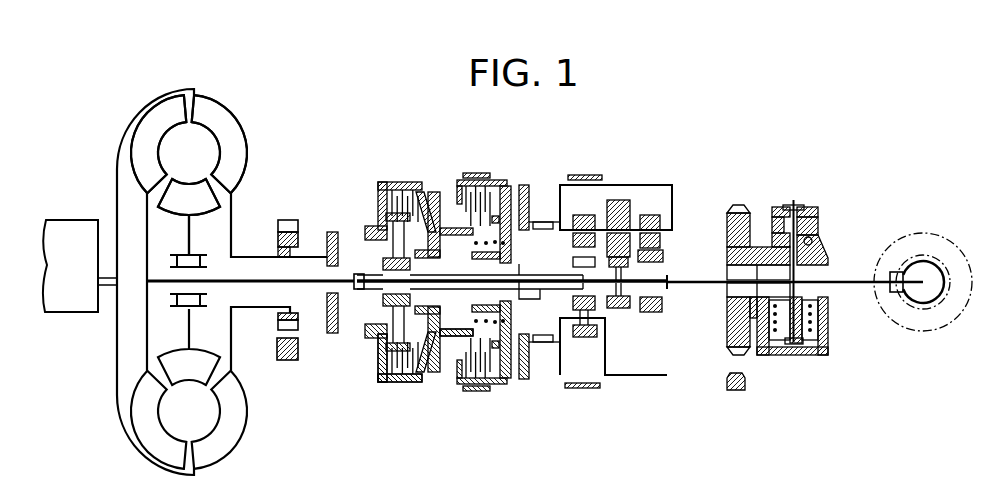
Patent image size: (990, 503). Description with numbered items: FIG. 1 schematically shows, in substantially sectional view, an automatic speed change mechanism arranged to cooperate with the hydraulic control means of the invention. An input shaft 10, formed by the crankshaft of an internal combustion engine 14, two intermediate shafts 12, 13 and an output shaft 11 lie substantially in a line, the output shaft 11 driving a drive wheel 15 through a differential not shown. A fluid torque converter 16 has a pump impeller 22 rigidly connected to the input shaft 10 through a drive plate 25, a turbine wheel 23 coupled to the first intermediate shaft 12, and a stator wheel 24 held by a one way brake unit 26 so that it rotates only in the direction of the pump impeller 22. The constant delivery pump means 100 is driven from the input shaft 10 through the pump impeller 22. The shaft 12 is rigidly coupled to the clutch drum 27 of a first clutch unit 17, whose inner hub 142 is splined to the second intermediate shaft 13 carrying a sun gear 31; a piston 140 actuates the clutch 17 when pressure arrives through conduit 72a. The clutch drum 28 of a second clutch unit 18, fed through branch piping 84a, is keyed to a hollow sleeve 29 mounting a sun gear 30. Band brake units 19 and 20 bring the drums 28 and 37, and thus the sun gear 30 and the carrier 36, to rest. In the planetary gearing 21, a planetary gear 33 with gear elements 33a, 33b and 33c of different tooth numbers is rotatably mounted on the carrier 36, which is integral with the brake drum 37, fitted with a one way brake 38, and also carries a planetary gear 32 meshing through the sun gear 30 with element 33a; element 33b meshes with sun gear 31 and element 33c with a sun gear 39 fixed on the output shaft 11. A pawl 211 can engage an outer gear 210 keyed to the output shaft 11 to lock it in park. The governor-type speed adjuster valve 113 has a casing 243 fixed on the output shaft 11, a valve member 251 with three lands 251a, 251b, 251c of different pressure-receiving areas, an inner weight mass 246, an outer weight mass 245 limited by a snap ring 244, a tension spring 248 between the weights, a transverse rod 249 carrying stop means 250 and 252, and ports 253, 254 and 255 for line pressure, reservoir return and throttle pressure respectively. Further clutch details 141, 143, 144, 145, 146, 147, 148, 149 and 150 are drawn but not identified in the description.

The input shaft 10 is at (107, 313).
The output shaft 11 is at (695, 284).
The first intermediate shaft 12 is at (253, 284).
The second intermediate shaft 13 is at (438, 282).
The internal combustion engine 14 is at (79, 273).
The drive wheel 15 is at (905, 332).
The fluid torque converter 16 is at (172, 86).
The first clutch unit 17 is at (400, 178).
The second clutch unit 18 is at (503, 184).
The first brake unit 19 is at (477, 172).
The second brake unit 20 is at (583, 173).
The planetary gearing 21 is at (618, 346).
The pump impeller 22 is at (208, 114).
The turbine wheel 23 is at (148, 130).
The stator wheel 24 is at (200, 200).
The drive plate 25 is at (118, 178).
The one way brake unit 26 is at (190, 256).
The clutch drum 27 is at (393, 182).
The clutch drum 28 is at (460, 180).
The hollow sleeve 29 is at (540, 290).
The sun gear 30 is at (597, 300).
The sun gear 31 is at (620, 303).
The planetary gear 32 is at (585, 338).
The planetary gear 33 is at (645, 217).
The gear element 33a is at (585, 216).
The gear element 33b is at (622, 200).
The gear element 33c is at (661, 222).
The carrier 36 is at (562, 184).
The brake drum 37 is at (604, 185).
The one way brake 38 is at (543, 222).
The sun gear 39 is at (662, 311).
The conduit 72a is at (442, 362).
The branch piping 84a is at (524, 380).
The pump means 100 is at (318, 206).
The speed adjuster valve 113 is at (784, 279).
The piston 140 is at (433, 368).
The lever 141 is at (410, 383).
The inner hub 142 is at (385, 300).
The clutch wall 143 is at (378, 357).
The clutch flange 144 is at (380, 378).
The lever 145 is at (422, 191).
The housing wall 146 is at (518, 220).
The spring seat 147 is at (488, 251).
The clutch plates 148 is at (465, 388).
The spring seat 149 is at (497, 372).
The springs 150 is at (472, 245).
The outer gear 210 is at (727, 350).
The pawl 211 is at (727, 382).
The casing 243 is at (828, 313).
The snap ring 244 is at (818, 358).
The outer weight mass 245 is at (818, 333).
The inner weight mass 246 is at (808, 347).
The tension spring 248 is at (778, 348).
The rod 249 is at (796, 290).
The stop means 250 is at (800, 344).
The valve member 251 is at (825, 224).
The land 251a is at (806, 207).
The land 251b is at (812, 238).
The land 251c is at (812, 262).
The stop means 252 is at (792, 206).
The port 253 is at (727, 234).
The port 254 is at (772, 222).
The port 255 is at (727, 258).